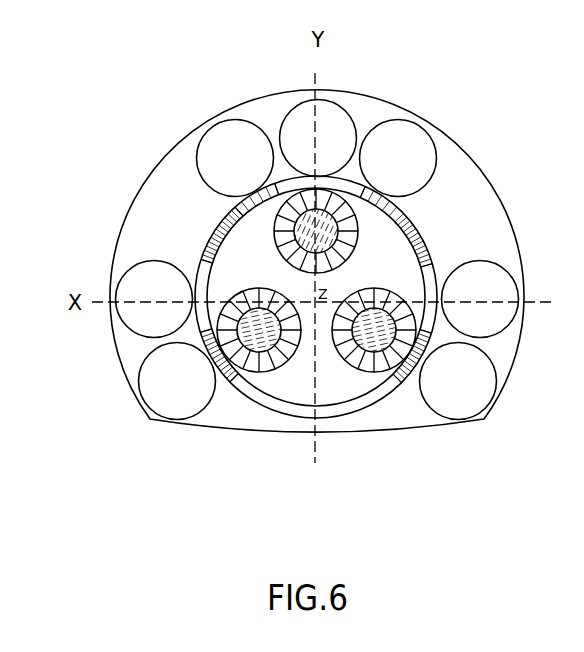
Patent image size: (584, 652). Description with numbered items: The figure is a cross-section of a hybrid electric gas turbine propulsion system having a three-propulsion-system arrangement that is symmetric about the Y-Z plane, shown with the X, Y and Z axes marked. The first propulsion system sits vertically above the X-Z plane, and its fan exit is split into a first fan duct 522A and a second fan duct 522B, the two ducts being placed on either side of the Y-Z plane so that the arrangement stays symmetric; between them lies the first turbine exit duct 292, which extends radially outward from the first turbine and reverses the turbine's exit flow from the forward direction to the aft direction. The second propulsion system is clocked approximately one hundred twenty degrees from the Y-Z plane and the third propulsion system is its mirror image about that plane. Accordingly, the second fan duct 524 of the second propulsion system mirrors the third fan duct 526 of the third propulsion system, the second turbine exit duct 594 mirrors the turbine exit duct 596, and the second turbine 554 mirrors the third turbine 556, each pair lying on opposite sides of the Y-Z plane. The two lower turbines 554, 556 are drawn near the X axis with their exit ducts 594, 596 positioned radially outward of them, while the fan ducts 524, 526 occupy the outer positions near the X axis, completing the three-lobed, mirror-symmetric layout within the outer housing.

The first turbine exit duct 292 is at (318, 147).
The first fan duct 522A is at (211, 169).
The second fan duct 522B is at (371, 174).
The second fan duct 524 is at (470, 299).
The third fan duct 526 is at (139, 289).
The second turbine 554 is at (403, 312).
The third turbine 556 is at (226, 330).
The second turbine exit duct 594 is at (443, 389).
The turbine exit duct 596 is at (161, 386).